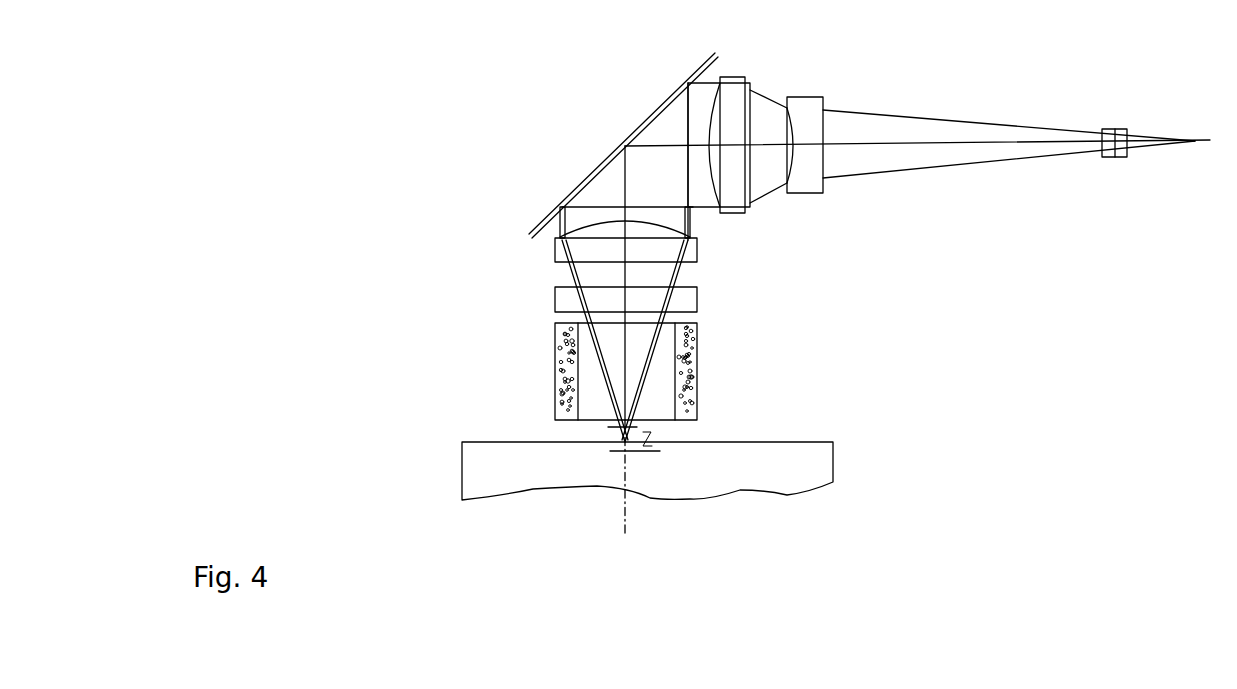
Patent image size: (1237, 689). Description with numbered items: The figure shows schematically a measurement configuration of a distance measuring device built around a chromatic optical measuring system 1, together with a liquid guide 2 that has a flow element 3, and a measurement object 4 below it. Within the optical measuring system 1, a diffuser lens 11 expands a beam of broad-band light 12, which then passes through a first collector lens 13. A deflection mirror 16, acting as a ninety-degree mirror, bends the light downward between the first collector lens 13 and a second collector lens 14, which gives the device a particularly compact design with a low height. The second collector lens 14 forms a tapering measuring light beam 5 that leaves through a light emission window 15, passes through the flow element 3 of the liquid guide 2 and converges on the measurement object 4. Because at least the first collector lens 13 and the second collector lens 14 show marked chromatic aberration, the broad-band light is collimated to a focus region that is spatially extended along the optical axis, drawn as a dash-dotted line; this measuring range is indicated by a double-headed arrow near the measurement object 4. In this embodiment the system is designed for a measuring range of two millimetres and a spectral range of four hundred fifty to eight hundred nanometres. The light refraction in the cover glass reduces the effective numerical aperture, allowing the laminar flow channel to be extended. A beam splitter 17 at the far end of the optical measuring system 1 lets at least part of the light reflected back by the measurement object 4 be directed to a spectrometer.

The optical measuring system 1 is at (470, 100).
The liquid guide 2 is at (443, 345).
The flow element 3 is at (542, 393).
The measurement object 4 is at (482, 472).
The tapering measuring light beam 5 is at (592, 357).
The diffuser lens 11 is at (808, 100).
The beam of broad-band light 12 is at (1000, 127).
The first collector lens 13 is at (740, 82).
The second collector lens 14 is at (555, 247).
The light emission window 15 is at (557, 300).
The deflection mirror 16 is at (668, 97).
The beam splitter 17 is at (1118, 128).